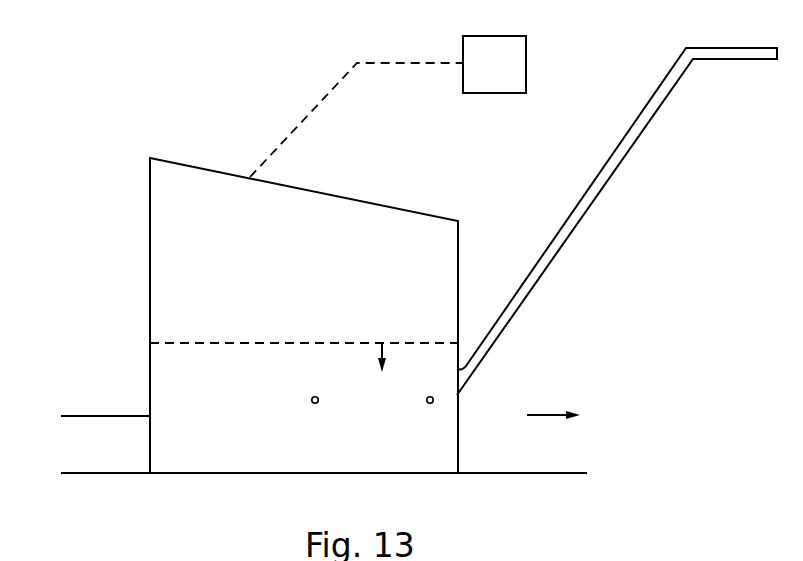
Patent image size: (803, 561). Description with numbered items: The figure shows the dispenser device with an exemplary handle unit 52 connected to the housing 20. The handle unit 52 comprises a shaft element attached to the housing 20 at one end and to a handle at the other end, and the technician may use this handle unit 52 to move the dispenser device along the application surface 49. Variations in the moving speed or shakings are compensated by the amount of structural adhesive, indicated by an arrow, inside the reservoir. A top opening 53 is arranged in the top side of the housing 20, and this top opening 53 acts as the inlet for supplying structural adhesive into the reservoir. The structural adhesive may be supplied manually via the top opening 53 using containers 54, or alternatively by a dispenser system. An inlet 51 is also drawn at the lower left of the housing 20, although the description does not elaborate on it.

The housing 20 is at (367, 197).
The application surface 49 is at (567, 473).
The inlet 51 is at (70, 400).
The handle unit 52 is at (640, 80).
The top opening 53 is at (230, 152).
The containers 54 is at (494, 64).